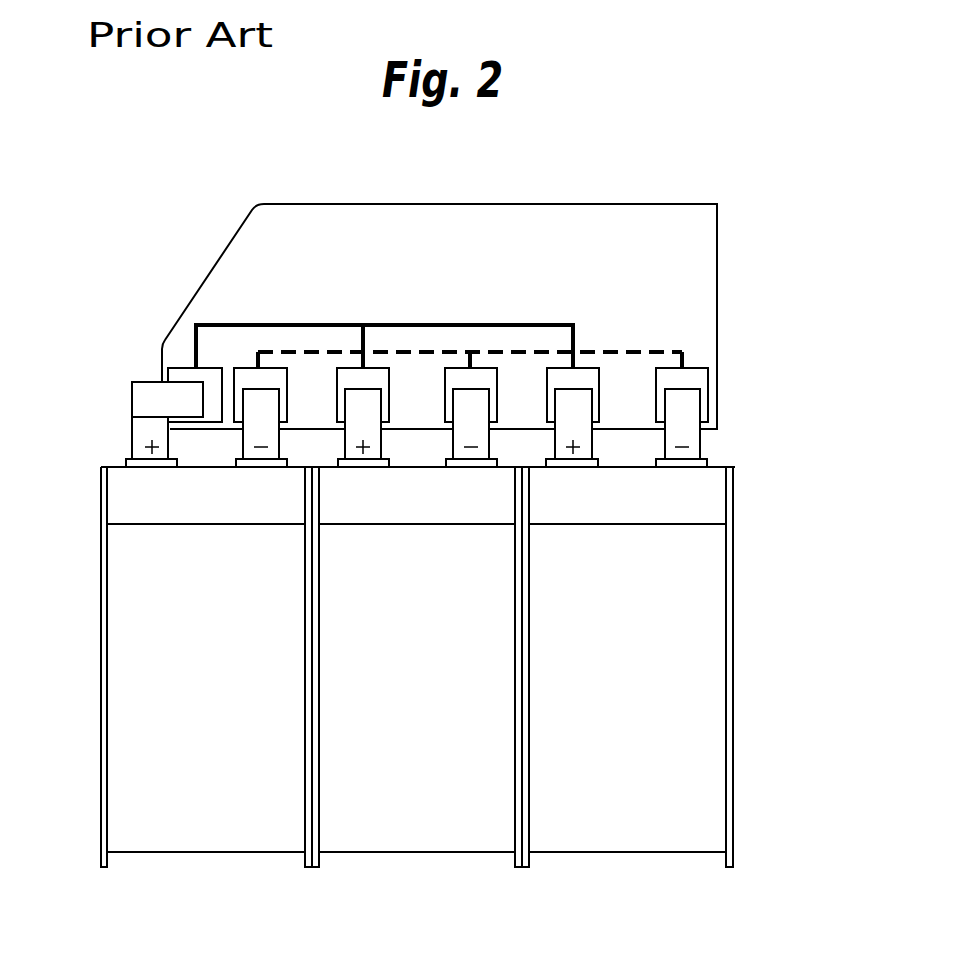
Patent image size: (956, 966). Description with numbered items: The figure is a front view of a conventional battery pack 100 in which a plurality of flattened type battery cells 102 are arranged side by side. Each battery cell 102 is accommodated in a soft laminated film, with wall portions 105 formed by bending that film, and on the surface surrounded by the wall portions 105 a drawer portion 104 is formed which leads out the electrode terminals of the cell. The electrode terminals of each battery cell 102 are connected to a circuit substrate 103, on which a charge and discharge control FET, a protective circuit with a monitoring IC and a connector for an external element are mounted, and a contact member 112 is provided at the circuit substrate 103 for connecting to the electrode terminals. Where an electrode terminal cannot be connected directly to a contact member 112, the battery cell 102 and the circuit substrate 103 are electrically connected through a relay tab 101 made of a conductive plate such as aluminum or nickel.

The battery pack 100 is at (740, 160).
The relay tab 101 is at (145, 402).
The battery cell 102 is at (208, 840).
The circuit substrate 103 is at (708, 236).
The drawer portion 104 is at (205, 503).
The wall portions 105 is at (527, 477).
The contact member 112 is at (695, 378).